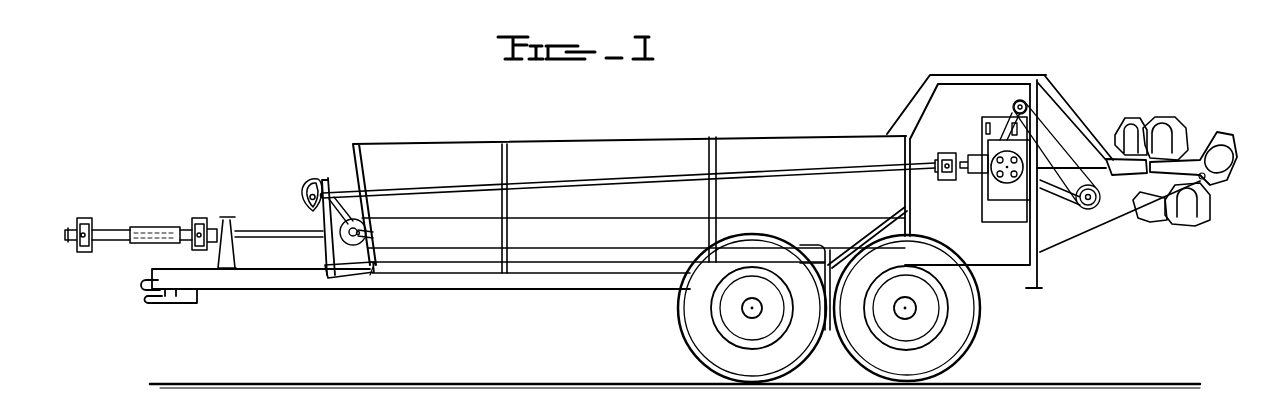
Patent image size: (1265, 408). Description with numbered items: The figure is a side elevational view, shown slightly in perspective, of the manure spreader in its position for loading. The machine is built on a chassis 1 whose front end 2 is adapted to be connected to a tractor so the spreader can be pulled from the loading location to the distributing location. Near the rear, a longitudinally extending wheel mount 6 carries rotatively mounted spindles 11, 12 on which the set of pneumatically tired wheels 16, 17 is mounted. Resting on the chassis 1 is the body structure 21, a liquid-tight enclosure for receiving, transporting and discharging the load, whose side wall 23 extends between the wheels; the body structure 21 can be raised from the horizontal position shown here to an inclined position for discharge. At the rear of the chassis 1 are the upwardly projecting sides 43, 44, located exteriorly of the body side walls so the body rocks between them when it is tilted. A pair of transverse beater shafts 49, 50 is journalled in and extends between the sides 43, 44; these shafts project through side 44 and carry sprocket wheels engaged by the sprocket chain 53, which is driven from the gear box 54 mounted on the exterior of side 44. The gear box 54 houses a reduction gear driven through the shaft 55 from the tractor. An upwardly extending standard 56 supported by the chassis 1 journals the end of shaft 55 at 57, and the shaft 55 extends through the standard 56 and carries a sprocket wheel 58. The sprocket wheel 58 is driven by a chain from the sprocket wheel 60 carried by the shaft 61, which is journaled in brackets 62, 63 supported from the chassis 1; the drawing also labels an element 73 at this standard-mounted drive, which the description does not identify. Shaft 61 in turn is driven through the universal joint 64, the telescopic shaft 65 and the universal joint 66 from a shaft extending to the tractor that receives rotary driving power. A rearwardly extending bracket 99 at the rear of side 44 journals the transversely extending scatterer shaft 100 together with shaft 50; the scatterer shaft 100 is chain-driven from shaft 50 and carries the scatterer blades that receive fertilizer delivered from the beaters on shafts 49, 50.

The chassis 1 is at (385, 283).
The front end 2 is at (152, 280).
The wheel mount 6 is at (829, 318).
The spindle 11 is at (903, 313).
The spindle 12 is at (750, 313).
The pneumatically tired wheel 16 is at (957, 335).
The pneumatically tired wheel 17 is at (702, 335).
The body structure 21 is at (631, 134).
The side wall 23 is at (590, 208).
The upwardly projecting side 43 is at (922, 89).
The upwardly extending side 44 is at (992, 85).
The beater shaft 49 is at (1030, 105).
The beater shaft 50 is at (1089, 207).
The sprocket chain 53 is at (1066, 134).
The gear box 54 is at (992, 191).
The shaft 55 is at (773, 175).
The standard 56 is at (332, 254).
The journal 57 is at (329, 178).
The sprocket wheel 58 is at (307, 182).
The sprocket wheel 60 is at (355, 249).
The shaft 61 is at (257, 238).
The bracket 62 is at (369, 243).
The bracket 63 is at (234, 222).
The universal joint 64 is at (201, 213).
The telescopic shaft 65 is at (153, 226).
The universal joint 66 is at (93, 217).
The chain 73 is at (365, 212).
The rearwardly extending bracket 99 is at (1130, 203).
The scatterer shaft 100 is at (1212, 197).